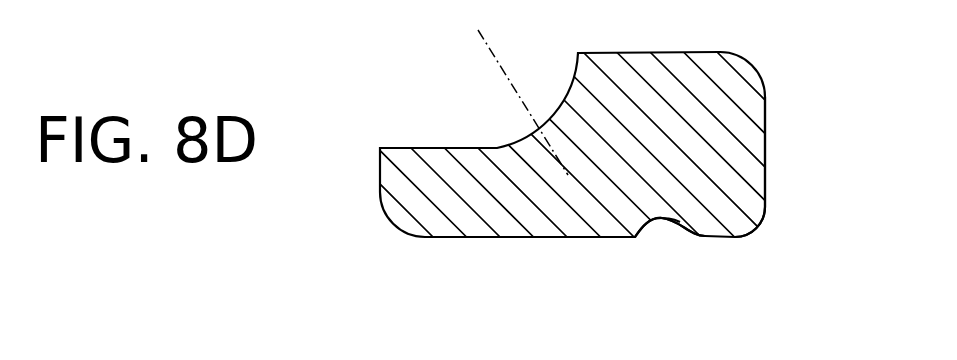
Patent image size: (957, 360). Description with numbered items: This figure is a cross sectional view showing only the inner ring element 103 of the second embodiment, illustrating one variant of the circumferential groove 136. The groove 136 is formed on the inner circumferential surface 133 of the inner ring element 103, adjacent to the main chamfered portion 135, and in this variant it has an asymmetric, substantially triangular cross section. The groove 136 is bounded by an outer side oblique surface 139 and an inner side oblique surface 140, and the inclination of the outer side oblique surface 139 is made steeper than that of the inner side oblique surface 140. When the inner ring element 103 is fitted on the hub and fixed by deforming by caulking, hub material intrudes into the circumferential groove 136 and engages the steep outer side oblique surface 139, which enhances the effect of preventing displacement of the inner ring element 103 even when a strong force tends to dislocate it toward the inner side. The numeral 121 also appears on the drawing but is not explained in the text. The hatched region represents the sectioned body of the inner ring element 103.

The inner ring element 103 is at (750, 117).
The outer peripheral surface 121 is at (768, 178).
The inner circumferential surface 133 is at (510, 236).
The main chamfered portion 135 is at (742, 233).
The circumferential groove 136 is at (673, 242).
The outer side oblique surface 139 is at (645, 234).
The inner side oblique surface 140 is at (703, 238).